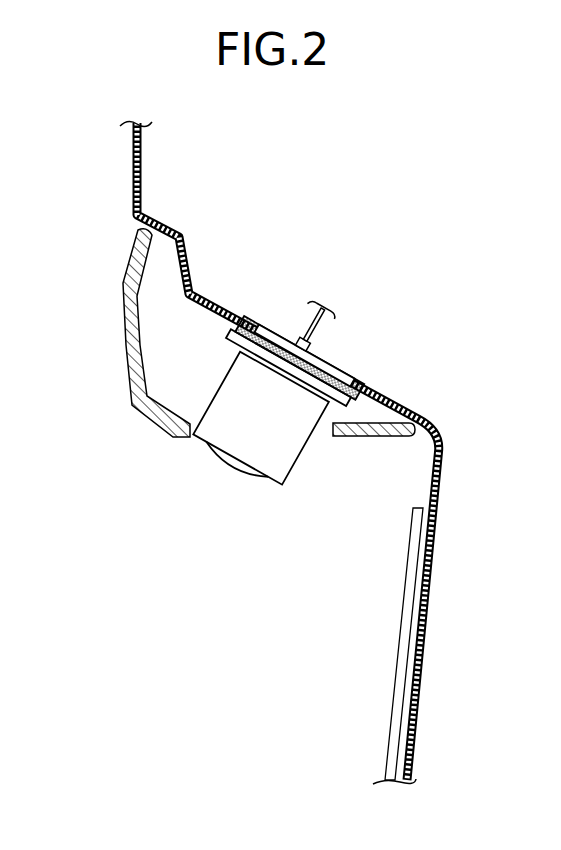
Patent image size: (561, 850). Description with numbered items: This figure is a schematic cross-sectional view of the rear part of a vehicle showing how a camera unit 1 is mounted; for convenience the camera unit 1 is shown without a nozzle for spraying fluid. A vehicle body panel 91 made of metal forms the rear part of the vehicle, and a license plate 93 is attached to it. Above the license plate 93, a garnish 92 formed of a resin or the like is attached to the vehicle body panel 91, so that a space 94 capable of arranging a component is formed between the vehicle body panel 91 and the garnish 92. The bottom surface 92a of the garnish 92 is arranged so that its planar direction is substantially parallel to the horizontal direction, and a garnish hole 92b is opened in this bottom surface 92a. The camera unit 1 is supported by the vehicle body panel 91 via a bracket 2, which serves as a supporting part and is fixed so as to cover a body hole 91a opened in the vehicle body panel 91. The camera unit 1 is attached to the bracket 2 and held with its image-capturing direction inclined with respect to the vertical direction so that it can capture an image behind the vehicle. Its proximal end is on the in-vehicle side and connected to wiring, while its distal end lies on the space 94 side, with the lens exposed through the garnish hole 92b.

The camera unit 1 is at (238, 446).
The bracket 2 is at (228, 325).
The vehicle body panel 91 is at (133, 181).
The body hole 91a is at (363, 364).
The garnish 92 is at (135, 355).
The bottom surface 92a is at (368, 437).
The garnish hole 92b is at (322, 444).
The license plate 93 is at (413, 604).
The space 94 is at (153, 295).